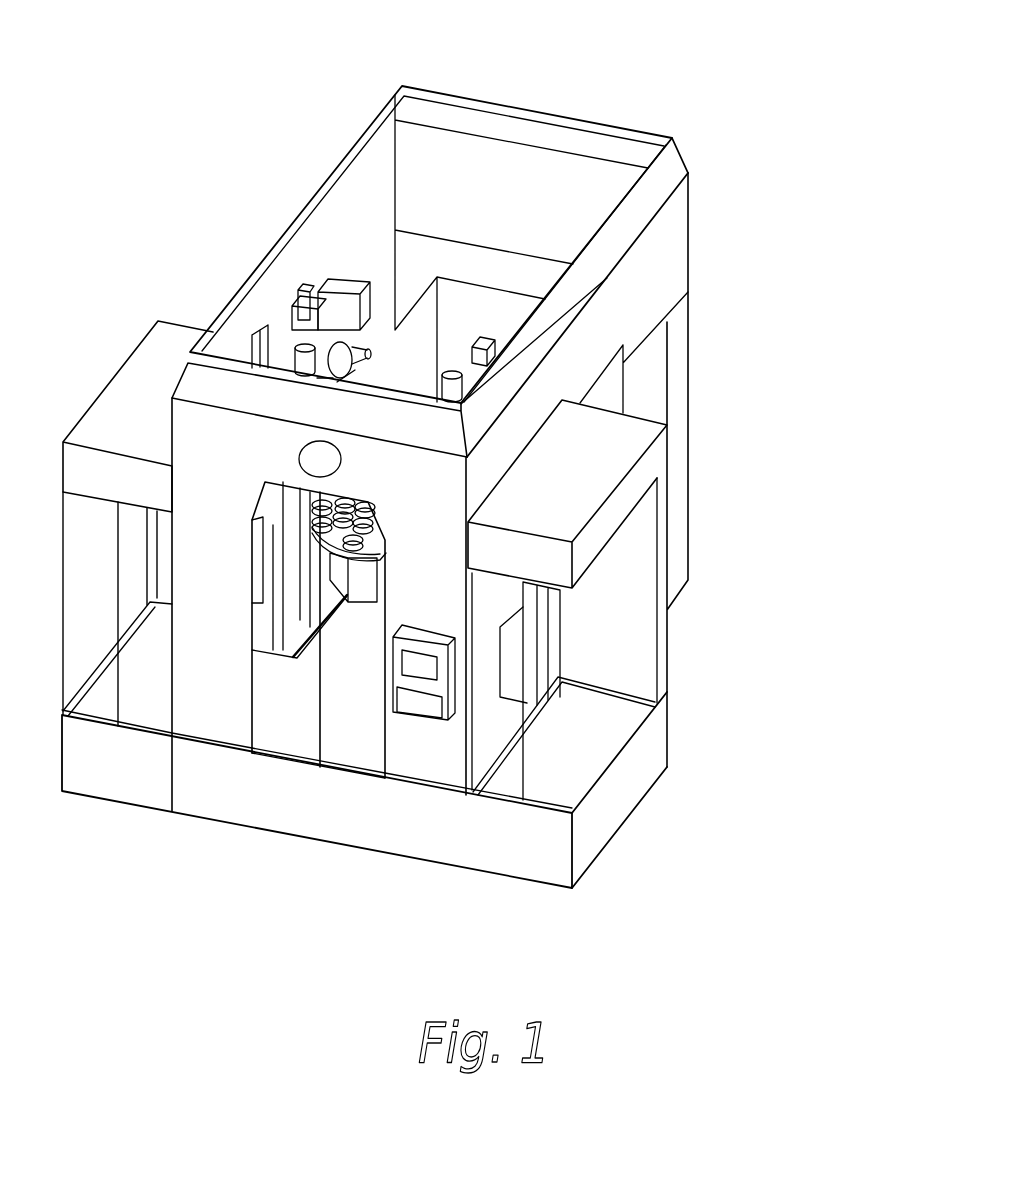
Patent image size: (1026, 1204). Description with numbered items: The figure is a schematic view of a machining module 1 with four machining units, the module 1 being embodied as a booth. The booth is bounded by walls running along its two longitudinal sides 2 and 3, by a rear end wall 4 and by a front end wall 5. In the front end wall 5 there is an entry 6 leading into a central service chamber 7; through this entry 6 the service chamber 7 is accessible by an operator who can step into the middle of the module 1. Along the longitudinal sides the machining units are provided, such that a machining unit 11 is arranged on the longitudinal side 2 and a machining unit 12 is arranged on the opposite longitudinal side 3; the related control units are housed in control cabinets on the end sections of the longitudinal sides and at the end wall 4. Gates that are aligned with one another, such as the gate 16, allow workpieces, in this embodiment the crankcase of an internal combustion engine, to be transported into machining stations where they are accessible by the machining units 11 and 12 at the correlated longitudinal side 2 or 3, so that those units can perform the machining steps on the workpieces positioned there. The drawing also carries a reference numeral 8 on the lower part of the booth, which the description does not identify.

The module 1 is at (752, 180).
The longitudinal side 2 is at (357, 203).
The longitudinal side 3 is at (658, 268).
The rear end wall 4 is at (523, 167).
The front end wall 5 is at (208, 727).
The entry 6 is at (365, 752).
The central service chamber 7 is at (338, 677).
The base 8 is at (247, 812).
The machining unit 11 is at (336, 296).
The machining unit 12 is at (494, 366).
The gate 16 is at (528, 645).